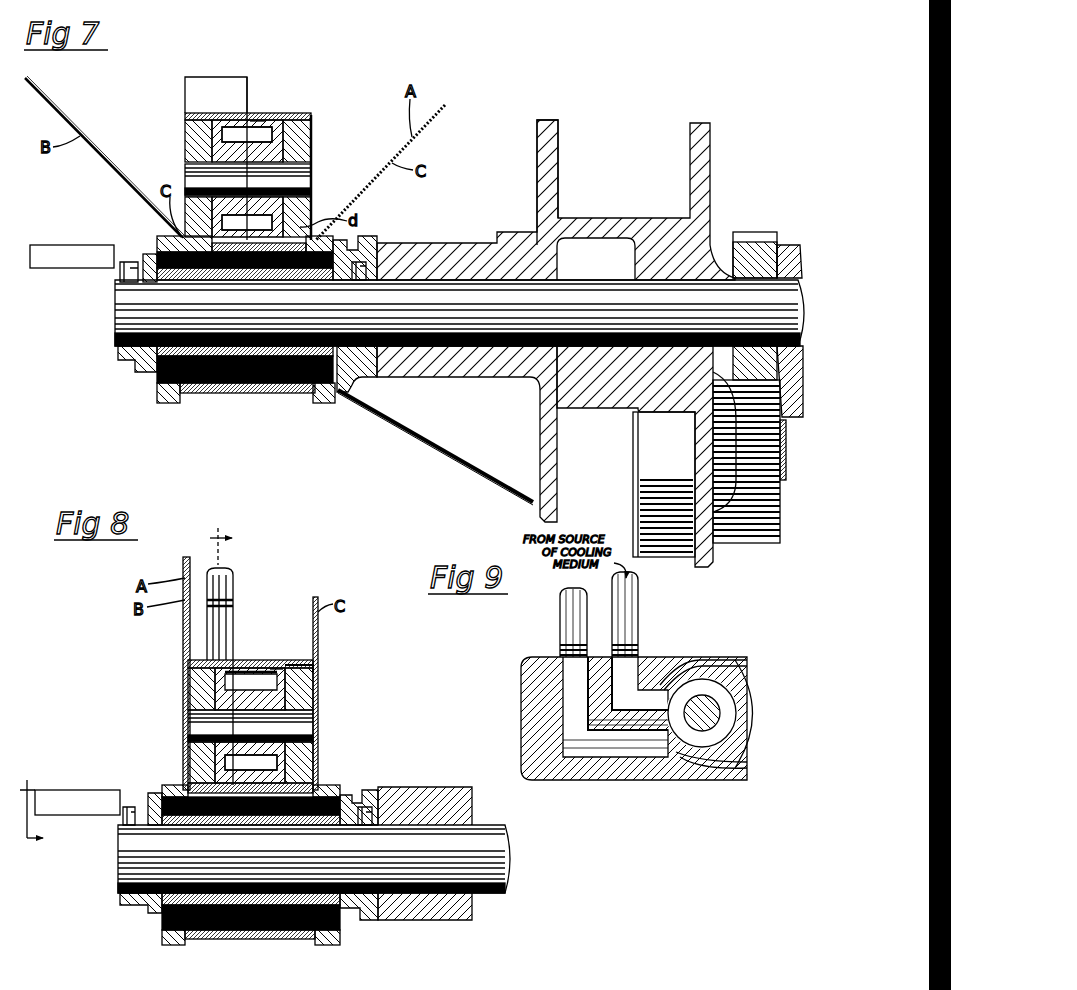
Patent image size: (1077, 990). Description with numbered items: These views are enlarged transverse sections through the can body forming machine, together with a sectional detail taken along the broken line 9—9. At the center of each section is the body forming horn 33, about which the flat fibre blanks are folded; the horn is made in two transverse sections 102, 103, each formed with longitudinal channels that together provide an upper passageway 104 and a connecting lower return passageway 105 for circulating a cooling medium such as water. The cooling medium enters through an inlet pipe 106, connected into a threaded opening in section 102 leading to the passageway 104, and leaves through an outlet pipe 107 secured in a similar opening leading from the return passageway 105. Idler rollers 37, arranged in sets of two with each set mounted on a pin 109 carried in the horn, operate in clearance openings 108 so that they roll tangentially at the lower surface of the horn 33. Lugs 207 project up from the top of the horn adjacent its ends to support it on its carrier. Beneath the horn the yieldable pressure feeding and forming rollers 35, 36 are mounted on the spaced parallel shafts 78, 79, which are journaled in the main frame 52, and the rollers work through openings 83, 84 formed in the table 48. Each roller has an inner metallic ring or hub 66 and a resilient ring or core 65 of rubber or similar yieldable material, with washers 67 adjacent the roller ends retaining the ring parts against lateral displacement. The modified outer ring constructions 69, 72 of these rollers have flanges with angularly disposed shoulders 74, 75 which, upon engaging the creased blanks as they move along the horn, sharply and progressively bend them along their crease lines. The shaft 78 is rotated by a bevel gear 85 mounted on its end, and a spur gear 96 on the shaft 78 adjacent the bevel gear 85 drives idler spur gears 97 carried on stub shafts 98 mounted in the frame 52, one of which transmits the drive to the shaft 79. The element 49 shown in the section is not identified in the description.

In FIG. 7, the lug 207 is at (213, 94).
In FIG. 7, the transverse section of horn 102 is at (187, 115).
In FIG. 8, the transverse section of horn 102 is at (240, 660).
In FIG. 9, the transverse section of horn 102 is at (537, 697).
In FIG. 7, the transverse section of horn 103 is at (257, 123).
In FIG. 8, the transverse section of horn 103 is at (277, 663).
In FIG. 7, the upper passageway 104 is at (260, 118).
In FIG. 8, the upper passageway 104 is at (277, 665).
In FIG. 9, the upper passageway 104 is at (660, 678).
In FIG. 7, the clearance openings 108 is at (313, 117).
In FIG. 8, the clearance openings 108 is at (318, 663).
In FIG. 7, the idler rollers 37 is at (197, 138).
In FIG. 8, the idler rollers 37 is at (202, 683).
In FIG. 9, the idler rollers 37 is at (750, 698).
In FIG. 7, the body forming horn 33 is at (293, 157).
In FIG. 8, the body forming horn 33 is at (255, 663).
In FIG. 9, the body forming horn 33 is at (620, 767).
In FIG. 7, the pin 109 is at (248, 180).
In FIG. 8, the pin 109 is at (207, 720).
In FIG. 9, the pin 109 is at (713, 730).
In FIG. 7, the lower return passageway 105 is at (275, 219).
In FIG. 8, the lower return passageway 105 is at (280, 766).
In FIG. 9, the lower return passageway 105 is at (640, 752).
In FIG. 7, the opening in table 83 is at (130, 247).
In FIG. 7, the table 48 is at (75, 255).
In FIG. 8, the table 48 is at (70, 798).
In FIG. 7, the shaft 78 is at (459, 313).
In FIG. 7, the main frame 52 is at (545, 163).
In FIG. 8, the main frame 52 is at (450, 802).
In FIG. 7, the spur gear 96 is at (747, 250).
In FIG. 7, the bevel gear 85 is at (785, 257).
In FIG. 7, the inner metallic ring or hub 66 is at (173, 358).
In FIG. 8, the inner metallic ring or hub 66 is at (200, 905).
In FIG. 7, the resilient ring or core 65 is at (222, 358).
In FIG. 8, the resilient ring or core 65 is at (240, 905).
In FIG. 7, the outer ring construction 69 is at (245, 388).
In FIG. 7, the pressure feeding and forming roller 35 is at (163, 393).
In FIG. 7, the shoulder 74 is at (180, 397).
In FIG. 7, the washers 67 is at (127, 360).
In FIG. 8, the washers 67 is at (137, 907).
In FIG. 7, the arm 49 is at (448, 437).
In FIG. 7, the stub shafts 98 is at (635, 443).
In FIG. 7, the idler spur gears 97 is at (780, 525).
In FIG. 8, the broken line 9— 9 is at (133, 689).
In FIG. 8, the outlet pipe 107 is at (230, 580).
In FIG. 9, the outlet pipe 107 is at (577, 615).
In FIG. 8, the inlet pipe 106 is at (225, 618).
In FIG. 9, the inlet pipe 106 is at (632, 618).
In FIG. 8, the opening in table 84 is at (132, 800).
In FIG. 8, the shaft 79 is at (314, 859).
In FIG. 8, the pressure feeding and forming roller 36 is at (163, 942).
In FIG. 8, the shoulder 75 is at (187, 943).
In FIG. 8, the outer ring construction 72 is at (267, 933).